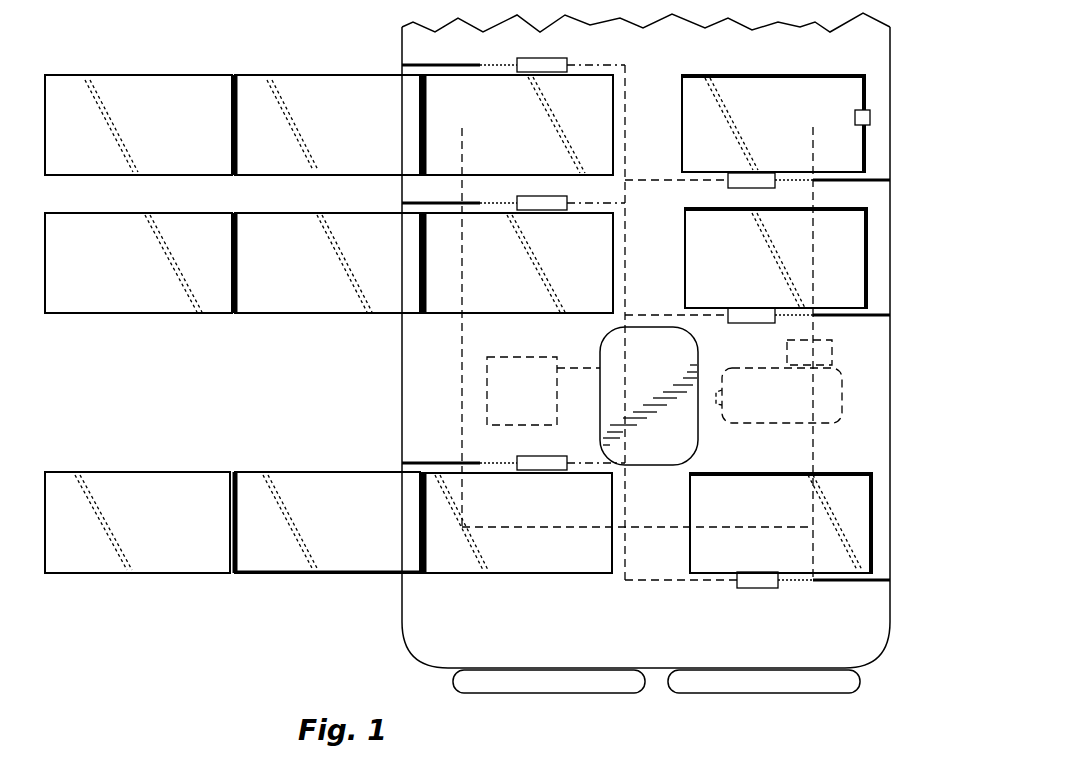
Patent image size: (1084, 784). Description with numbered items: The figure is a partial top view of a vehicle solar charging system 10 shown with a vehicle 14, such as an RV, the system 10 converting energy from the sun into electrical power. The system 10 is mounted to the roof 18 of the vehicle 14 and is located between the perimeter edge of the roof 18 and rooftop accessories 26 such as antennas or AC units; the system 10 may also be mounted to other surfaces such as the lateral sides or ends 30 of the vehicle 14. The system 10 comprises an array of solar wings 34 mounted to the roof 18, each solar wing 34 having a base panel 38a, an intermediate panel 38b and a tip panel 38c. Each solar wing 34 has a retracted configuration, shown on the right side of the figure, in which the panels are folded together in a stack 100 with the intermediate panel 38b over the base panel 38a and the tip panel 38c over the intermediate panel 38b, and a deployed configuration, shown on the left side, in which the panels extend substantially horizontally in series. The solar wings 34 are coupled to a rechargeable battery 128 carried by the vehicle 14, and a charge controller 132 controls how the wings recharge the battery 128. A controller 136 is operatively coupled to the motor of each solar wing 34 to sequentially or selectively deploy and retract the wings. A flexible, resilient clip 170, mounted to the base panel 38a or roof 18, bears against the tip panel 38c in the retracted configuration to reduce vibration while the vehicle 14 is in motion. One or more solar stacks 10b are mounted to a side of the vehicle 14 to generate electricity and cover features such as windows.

The vehicle solar charging system 10 is at (168, 620).
The solar stack 10b is at (685, 685).
The vehicle 14 is at (873, 658).
The roof 18 is at (867, 623).
The rooftop accessories 26 is at (600, 425).
The lateral sides or ends 30 is at (400, 625).
The solar wing 34 is at (860, 527).
The base panel 38a is at (445, 305).
The intermediate panel 38b is at (260, 298).
The tip panel 38c is at (76, 298).
The stack 100 is at (863, 493).
The rechargeable battery 128 is at (842, 408).
The charge controller 132 is at (833, 355).
The controller 136 is at (487, 390).
The clip 170 is at (870, 119).